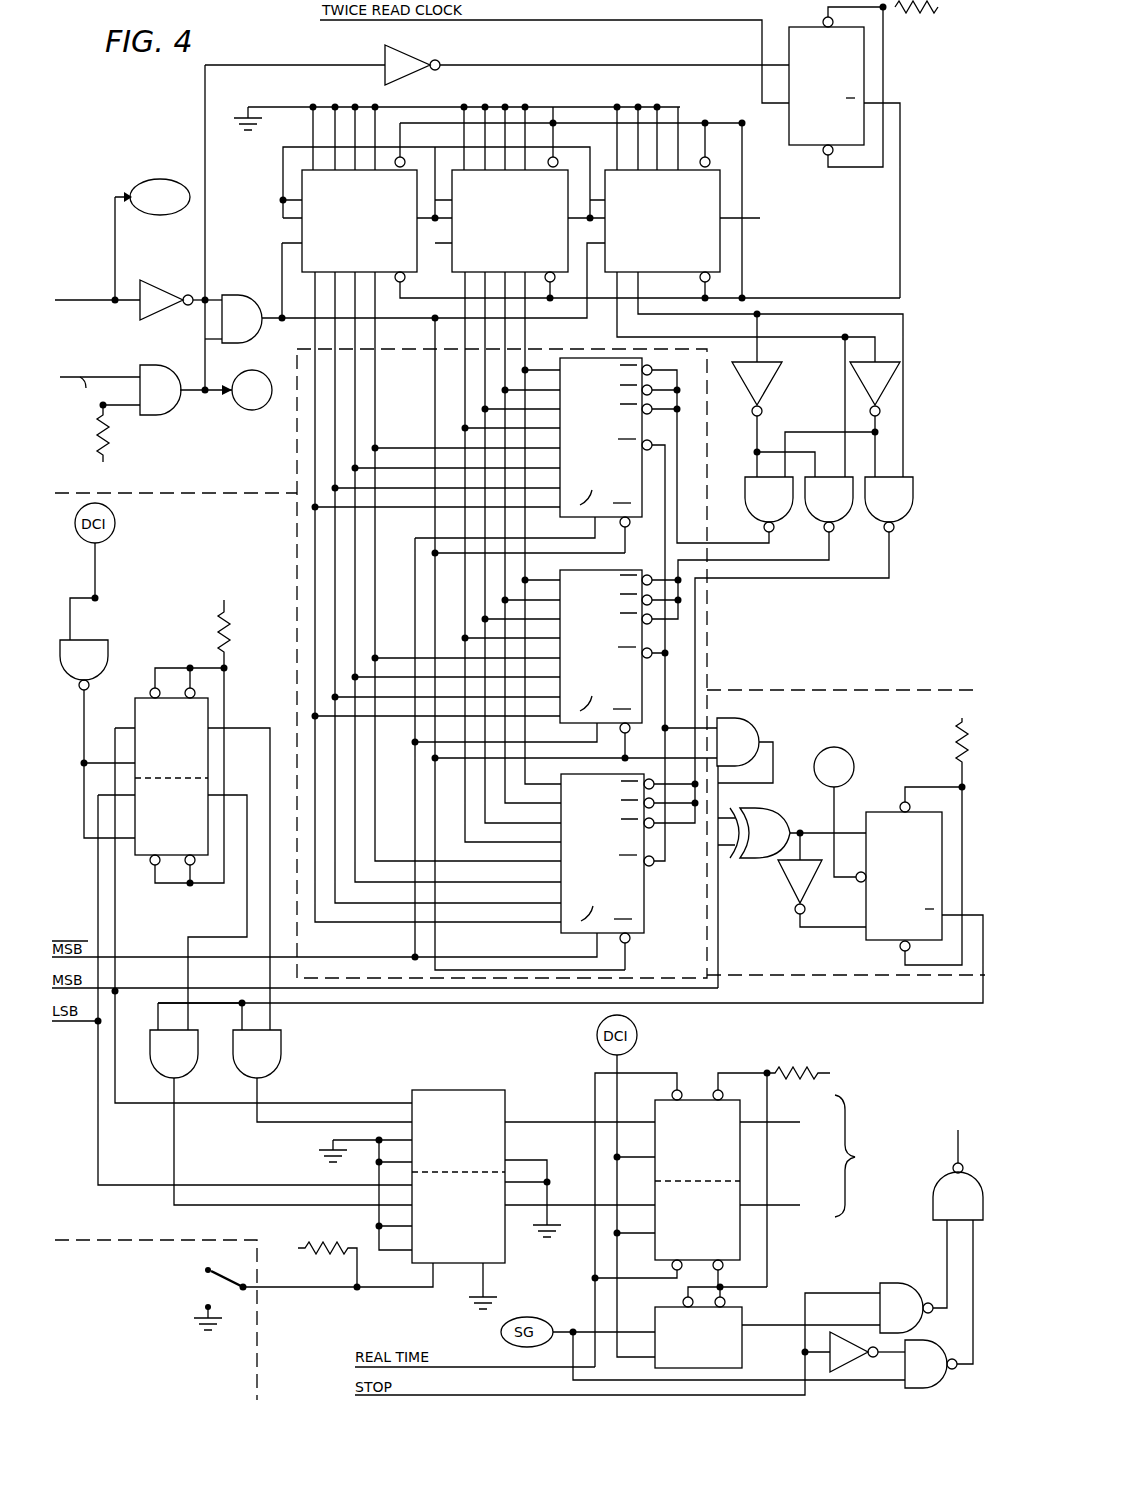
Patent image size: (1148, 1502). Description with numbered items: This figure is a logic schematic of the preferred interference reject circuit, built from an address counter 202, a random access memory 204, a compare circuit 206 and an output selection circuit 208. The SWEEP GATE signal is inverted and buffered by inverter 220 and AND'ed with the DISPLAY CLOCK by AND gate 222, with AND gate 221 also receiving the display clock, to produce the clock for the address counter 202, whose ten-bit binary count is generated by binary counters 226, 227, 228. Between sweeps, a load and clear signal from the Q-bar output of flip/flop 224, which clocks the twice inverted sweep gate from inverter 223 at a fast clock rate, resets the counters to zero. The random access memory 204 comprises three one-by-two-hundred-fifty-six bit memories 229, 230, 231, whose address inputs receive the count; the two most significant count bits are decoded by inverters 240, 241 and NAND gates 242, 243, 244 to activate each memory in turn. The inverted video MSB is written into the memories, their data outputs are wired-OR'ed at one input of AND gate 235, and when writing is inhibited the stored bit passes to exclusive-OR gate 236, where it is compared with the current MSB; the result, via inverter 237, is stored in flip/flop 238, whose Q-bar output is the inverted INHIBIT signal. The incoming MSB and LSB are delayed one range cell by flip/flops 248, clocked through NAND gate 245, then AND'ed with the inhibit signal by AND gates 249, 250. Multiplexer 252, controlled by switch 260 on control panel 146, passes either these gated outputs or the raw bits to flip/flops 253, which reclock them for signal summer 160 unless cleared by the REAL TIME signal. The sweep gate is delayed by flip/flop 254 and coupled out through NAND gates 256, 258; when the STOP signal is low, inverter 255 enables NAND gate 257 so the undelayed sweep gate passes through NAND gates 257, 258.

The control panel 146 is at (200, 1393).
The signal summer 160 is at (872, 1181).
The address counter 202 is at (132, 160).
The random access memory 204 is at (297, 525).
The compare circuit 206 is at (920, 678).
The output selection circuit 208 is at (498, 1061).
The inverter 220 is at (152, 295).
The AND gate 221 is at (160, 372).
The AND gate 222 is at (237, 300).
The inverter 223 is at (408, 56).
The flip/flop 224 is at (798, 33).
The binary counter 226 is at (370, 228).
The binary counter 227 is at (520, 228).
The binary counter 228 is at (673, 228).
The random access memory 229 is at (600, 453).
The random access memory 230 is at (600, 658).
The random access memory 231 is at (601, 868).
The AND gate 235 is at (730, 722).
The exclusive-OR gate 236 is at (758, 812).
The inverter 237 is at (788, 872).
The flip/flop 238 is at (928, 887).
The inverter 240 is at (760, 387).
The inverter 241 is at (892, 387).
The NAND gate 242 is at (750, 500).
The NAND gate 243 is at (816, 520).
The NAND gate 244 is at (874, 522).
The NAND gate 245 is at (98, 648).
The flip/flops 248 is at (208, 710).
The AND gate 249 is at (186, 1068).
The AND gate 250 is at (276, 1068).
The multiplexer 252 is at (483, 1095).
The flip/flops 253 is at (700, 1095).
The flip/flop 254 is at (738, 1310).
The inverter 255 is at (836, 1340).
The NAND gate 256 is at (898, 1296).
The NAND gate 257 is at (930, 1356).
The NAND gate 258 is at (938, 1198).
The switch 260 is at (205, 1288).